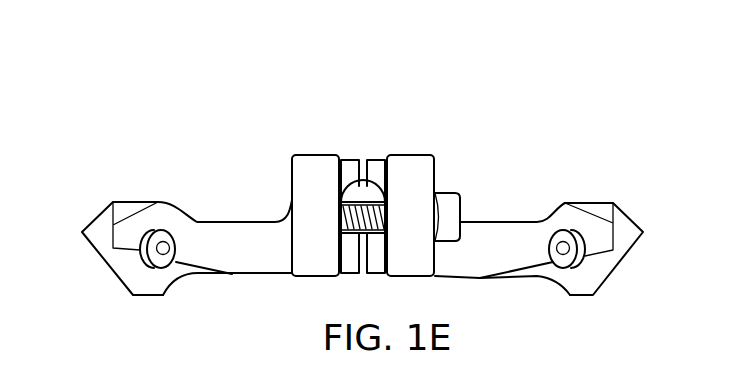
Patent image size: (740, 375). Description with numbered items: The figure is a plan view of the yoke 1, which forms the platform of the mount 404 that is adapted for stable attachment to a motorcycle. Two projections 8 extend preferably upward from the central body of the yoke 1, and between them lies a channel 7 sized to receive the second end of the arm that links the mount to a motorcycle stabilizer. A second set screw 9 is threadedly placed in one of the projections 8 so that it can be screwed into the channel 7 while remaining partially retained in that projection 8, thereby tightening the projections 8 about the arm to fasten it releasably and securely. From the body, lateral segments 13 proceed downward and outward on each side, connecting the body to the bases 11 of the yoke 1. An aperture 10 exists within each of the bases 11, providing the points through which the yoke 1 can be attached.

The mount 404 is at (208, 90).
The yoke 1 is at (183, 167).
The channel 7 is at (375, 187).
The projections 8 is at (302, 165).
The second set screw 9 is at (353, 190).
The aperture 10 is at (148, 267).
The bases 11 is at (112, 223).
The lateral segments 13 is at (255, 260).